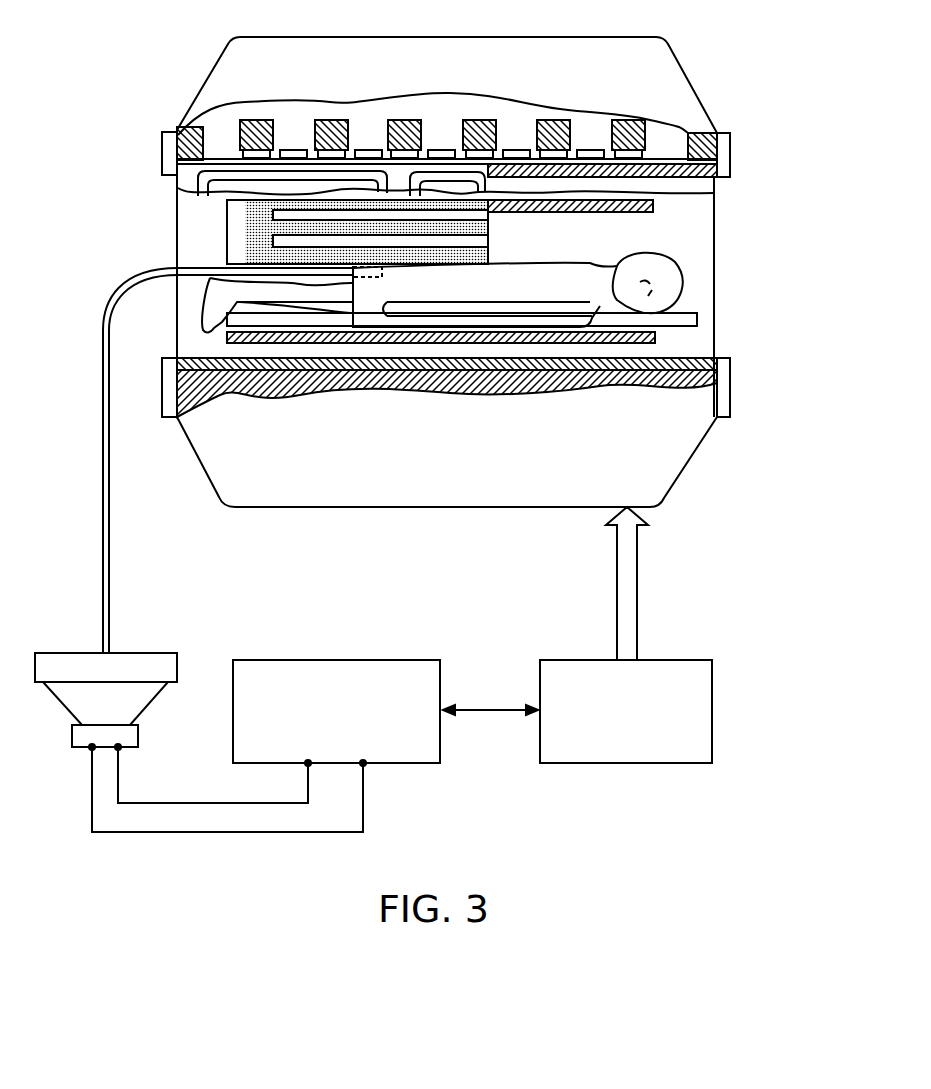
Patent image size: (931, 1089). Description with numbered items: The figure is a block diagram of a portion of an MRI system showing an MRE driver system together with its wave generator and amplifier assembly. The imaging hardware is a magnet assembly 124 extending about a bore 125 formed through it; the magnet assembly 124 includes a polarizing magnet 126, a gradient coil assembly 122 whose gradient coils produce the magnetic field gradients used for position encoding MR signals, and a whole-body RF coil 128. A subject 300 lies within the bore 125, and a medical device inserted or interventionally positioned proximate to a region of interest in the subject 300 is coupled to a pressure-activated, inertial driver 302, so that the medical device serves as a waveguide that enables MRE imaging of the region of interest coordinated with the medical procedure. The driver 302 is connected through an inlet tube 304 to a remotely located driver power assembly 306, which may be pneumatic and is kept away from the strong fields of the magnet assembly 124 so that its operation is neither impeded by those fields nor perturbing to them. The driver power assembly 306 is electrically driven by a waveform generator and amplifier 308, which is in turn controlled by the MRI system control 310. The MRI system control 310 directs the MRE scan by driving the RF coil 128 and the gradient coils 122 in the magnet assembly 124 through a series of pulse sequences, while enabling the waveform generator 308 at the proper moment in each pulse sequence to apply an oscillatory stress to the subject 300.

The gradient coil assembly 122 is at (197, 170).
The magnet assembly 124 is at (197, 68).
The bore 125 is at (732, 224).
The polarizing magnet 126 is at (445, 195).
The whole-body RF coil 128 is at (615, 226).
The subject 300 is at (455, 291).
The pressure-activated inertial driver 302 is at (383, 266).
The inlet tube 304 is at (150, 277).
The driver power assembly 306 is at (190, 663).
The waveform generator and amplifier 308 is at (360, 660).
The MRI system control 310 is at (625, 763).